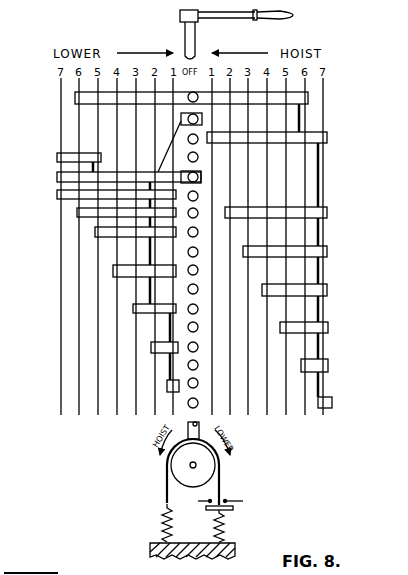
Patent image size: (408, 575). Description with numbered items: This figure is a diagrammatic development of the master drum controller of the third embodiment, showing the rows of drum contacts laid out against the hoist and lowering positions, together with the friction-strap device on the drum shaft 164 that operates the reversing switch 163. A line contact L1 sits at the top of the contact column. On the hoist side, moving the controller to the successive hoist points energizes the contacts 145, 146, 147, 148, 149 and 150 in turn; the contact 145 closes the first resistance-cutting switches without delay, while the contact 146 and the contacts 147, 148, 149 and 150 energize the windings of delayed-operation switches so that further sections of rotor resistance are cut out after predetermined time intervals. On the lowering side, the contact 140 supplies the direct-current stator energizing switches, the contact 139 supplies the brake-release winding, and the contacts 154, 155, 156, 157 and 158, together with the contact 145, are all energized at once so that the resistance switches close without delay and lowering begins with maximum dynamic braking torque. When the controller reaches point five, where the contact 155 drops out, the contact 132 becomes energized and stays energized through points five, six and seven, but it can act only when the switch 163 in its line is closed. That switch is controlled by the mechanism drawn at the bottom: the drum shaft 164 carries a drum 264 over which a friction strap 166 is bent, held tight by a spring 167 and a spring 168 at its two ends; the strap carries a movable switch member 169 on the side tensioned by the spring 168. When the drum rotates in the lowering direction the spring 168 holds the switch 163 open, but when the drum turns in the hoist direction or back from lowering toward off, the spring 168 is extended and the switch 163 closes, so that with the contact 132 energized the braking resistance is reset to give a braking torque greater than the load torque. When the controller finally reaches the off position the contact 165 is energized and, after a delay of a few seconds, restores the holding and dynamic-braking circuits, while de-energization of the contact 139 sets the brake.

The drum shaft 164 is at (192, 40).
The line contact L1 is at (198, 95).
The contact 165 is at (202, 119).
The contact 132 is at (198, 157).
The contact 140 is at (201, 177).
The contact 139 is at (198, 196).
The contact 145 is at (198, 213).
The contact 154 is at (198, 232).
The contact 146 is at (198, 252).
The contact 155 is at (198, 270).
The contact 147 is at (198, 289).
The contact 156 is at (198, 309).
The contact 148 is at (198, 327).
The contact 157 is at (198, 347).
The contact 149 is at (198, 365).
The contact 158 is at (198, 383).
The contact 150 is at (198, 403).
The drum 264 is at (173, 460).
The friction strap 166 is at (220, 483).
The switch 163 is at (224, 499).
The movable switch member 169 is at (234, 508).
The spring 167 is at (163, 523).
The spring 168 is at (224, 529).